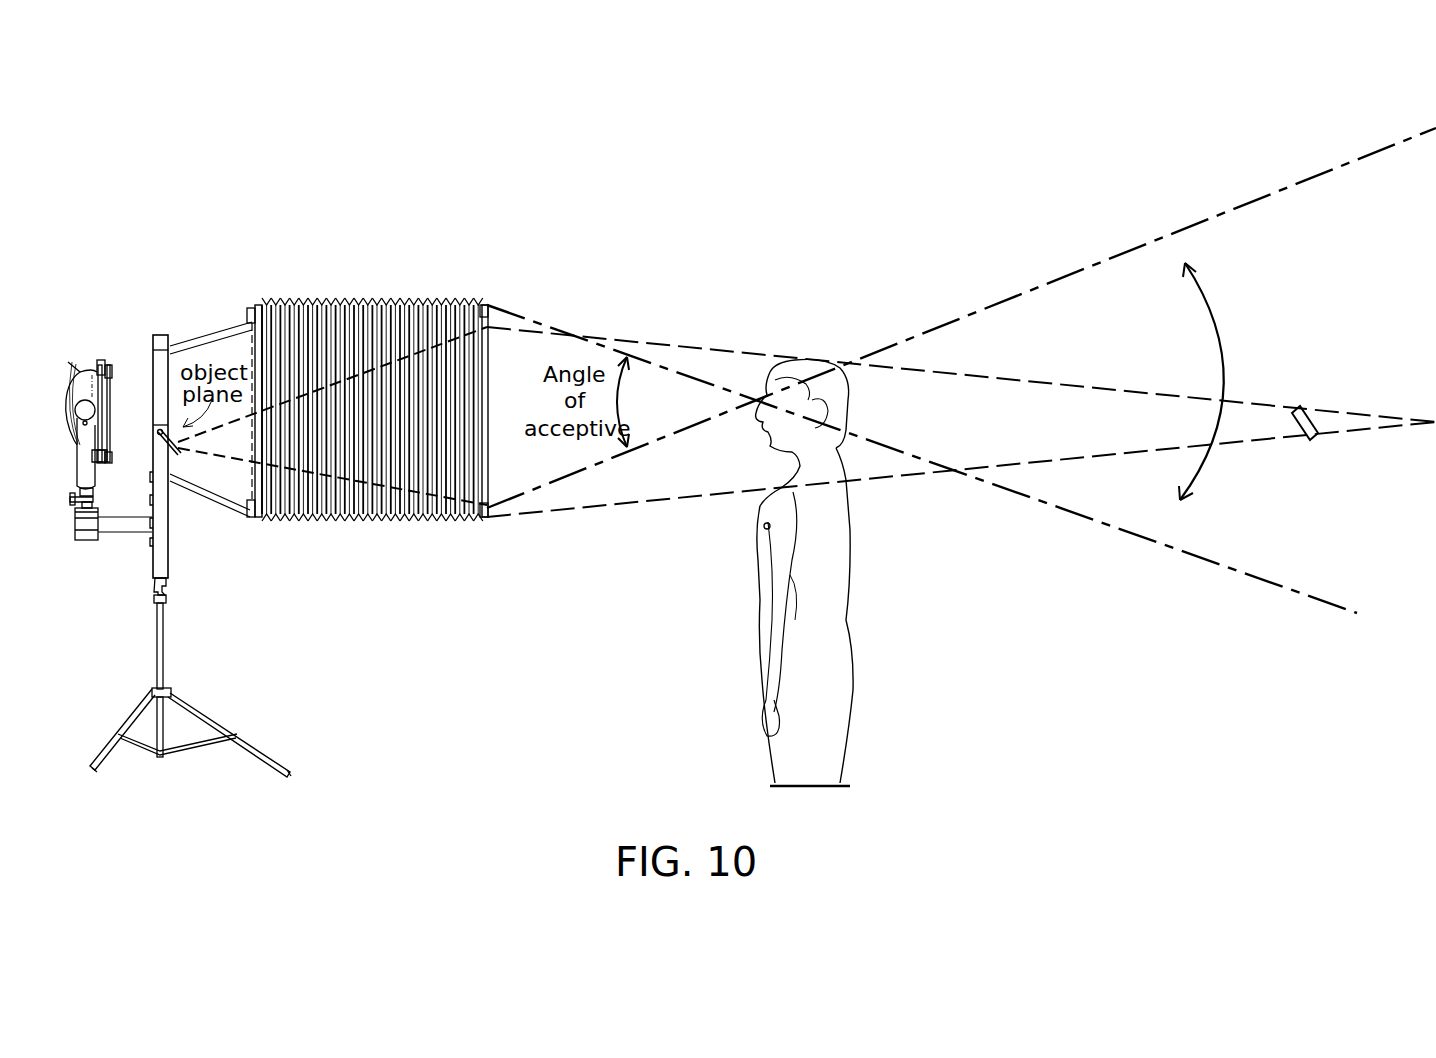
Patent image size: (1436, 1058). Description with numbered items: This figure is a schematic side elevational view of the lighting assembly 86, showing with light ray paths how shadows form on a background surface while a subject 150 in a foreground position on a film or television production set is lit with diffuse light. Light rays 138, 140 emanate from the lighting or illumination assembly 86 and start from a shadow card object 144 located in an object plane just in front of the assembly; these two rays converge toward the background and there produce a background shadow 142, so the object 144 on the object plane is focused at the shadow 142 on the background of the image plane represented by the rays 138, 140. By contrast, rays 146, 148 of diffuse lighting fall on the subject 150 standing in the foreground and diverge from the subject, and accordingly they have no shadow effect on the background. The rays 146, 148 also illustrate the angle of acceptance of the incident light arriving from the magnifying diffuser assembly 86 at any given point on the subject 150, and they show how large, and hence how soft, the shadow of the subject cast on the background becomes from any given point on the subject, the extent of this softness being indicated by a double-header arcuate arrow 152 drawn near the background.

The lighting assembly 86 is at (345, 228).
The light ray 138 is at (710, 347).
The light ray 140 is at (652, 504).
The background shadow 142 is at (1297, 432).
The shadow card object 144 is at (164, 440).
The ray of diffuse lighting 146 is at (528, 322).
The ray of diffuse lighting 148 is at (528, 490).
The subject 150 is at (846, 565).
The double-header arcuate arrow 152 is at (1213, 328).